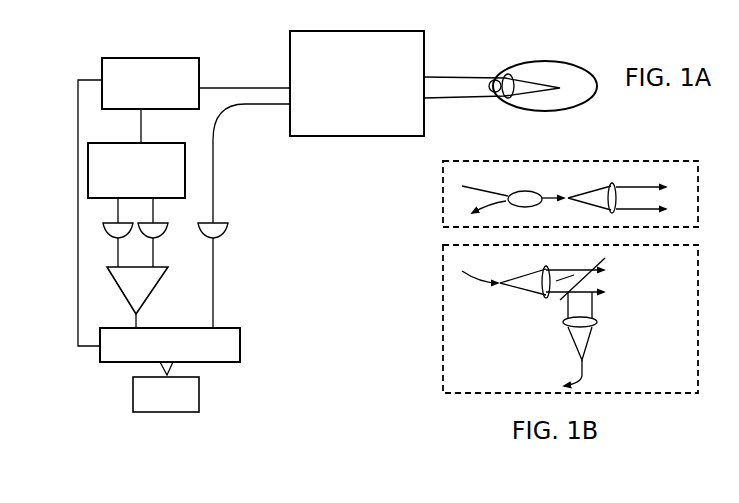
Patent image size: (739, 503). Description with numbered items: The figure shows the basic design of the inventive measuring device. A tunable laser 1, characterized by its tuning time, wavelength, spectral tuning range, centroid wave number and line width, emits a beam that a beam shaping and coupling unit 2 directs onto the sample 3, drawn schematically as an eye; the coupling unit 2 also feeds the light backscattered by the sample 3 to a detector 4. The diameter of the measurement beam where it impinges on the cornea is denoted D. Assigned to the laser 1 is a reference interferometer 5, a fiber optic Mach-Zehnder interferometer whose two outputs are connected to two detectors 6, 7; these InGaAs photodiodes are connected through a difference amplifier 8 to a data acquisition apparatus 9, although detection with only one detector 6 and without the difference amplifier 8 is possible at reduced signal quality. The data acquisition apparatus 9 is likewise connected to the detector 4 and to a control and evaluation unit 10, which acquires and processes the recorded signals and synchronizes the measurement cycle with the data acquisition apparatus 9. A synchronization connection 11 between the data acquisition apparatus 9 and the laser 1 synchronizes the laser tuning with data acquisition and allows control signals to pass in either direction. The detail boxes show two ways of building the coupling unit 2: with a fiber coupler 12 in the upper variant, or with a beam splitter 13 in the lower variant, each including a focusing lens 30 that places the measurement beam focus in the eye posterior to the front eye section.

In FIG. 1A, the tunable laser 1 is at (168, 78).
In FIG. 1A, the beam shaping and coupling unit 2 is at (415, 80).
In FIG. 1A, the sample 3 is at (577, 82).
In FIG. 1A, the detector 4 is at (225, 226).
In FIG. 1A, the reference interferometer 5 is at (167, 187).
In FIG. 1A, the detector 6 is at (110, 233).
In FIG. 1A, the detector 7 is at (165, 222).
In FIG. 1A, the difference amplifier 8 is at (130, 297).
In FIG. 1A, the data acquisition apparatus 9 is at (220, 348).
In FIG. 1A, the control and evaluation unit 10 is at (185, 401).
In FIG. 1A, the synchronization connection 11 is at (77, 113).
In FIG. 1B, the fiber coupler 12 is at (521, 190).
In FIG. 1B, the beam splitter 13 is at (597, 271).
In FIG. 1B, the focusing lens 30 is at (612, 183).
In FIG. 1B, the diameter of the measurement beam D is at (495, 96).